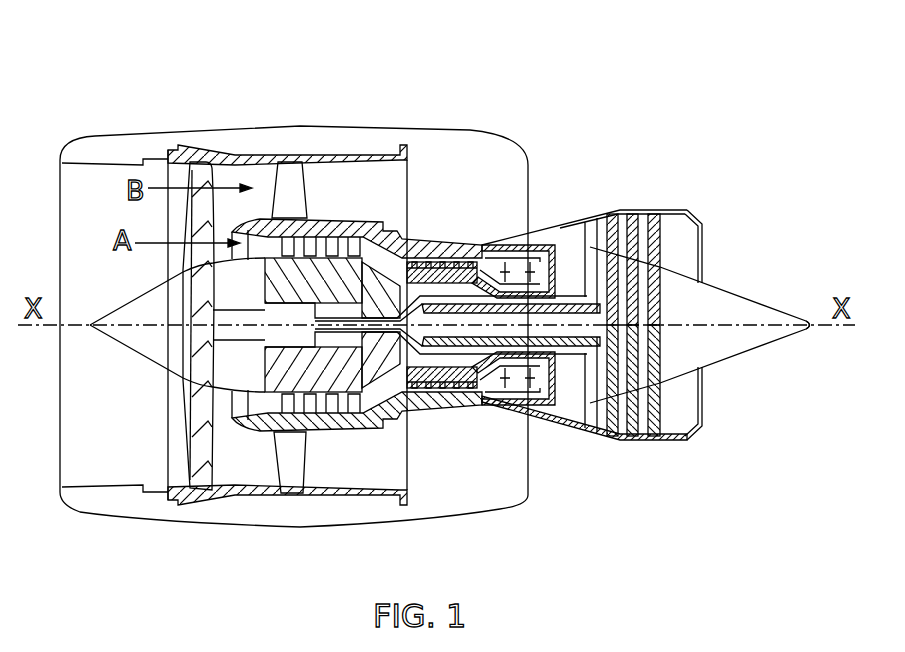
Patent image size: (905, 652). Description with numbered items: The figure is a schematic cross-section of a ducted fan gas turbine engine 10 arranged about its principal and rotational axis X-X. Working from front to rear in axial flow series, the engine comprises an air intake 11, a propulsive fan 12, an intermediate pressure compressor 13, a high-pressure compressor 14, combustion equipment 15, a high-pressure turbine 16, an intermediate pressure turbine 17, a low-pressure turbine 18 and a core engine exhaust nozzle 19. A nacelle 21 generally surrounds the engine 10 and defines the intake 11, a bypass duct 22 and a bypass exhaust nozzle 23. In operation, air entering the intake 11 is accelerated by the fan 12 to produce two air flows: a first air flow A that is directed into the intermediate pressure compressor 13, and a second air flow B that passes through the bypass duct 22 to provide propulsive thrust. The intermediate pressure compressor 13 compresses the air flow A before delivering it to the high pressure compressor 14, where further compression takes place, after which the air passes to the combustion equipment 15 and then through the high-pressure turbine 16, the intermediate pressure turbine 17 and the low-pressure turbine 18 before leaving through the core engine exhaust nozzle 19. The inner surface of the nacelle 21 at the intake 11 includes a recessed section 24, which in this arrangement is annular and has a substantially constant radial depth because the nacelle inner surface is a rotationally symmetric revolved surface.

The ducted fan gas turbine engine 10 is at (100, 85).
The air intake 11 is at (110, 165).
The propulsive fan 12 is at (183, 445).
The intermediate pressure compressor 13 is at (327, 412).
The high-pressure compressor 14 is at (445, 268).
The combustion equipment 15 is at (498, 388).
The high-pressure turbine 16 is at (548, 410).
The intermediate pressure turbine 17 is at (593, 245).
The low-pressure turbine 18 is at (597, 435).
The core engine exhaust nozzle 19 is at (697, 216).
The nacelle 21 is at (333, 142).
The bypass duct 22 is at (490, 196).
The bypass exhaust nozzle 23 is at (520, 137).
The recessed section 24 is at (147, 490).